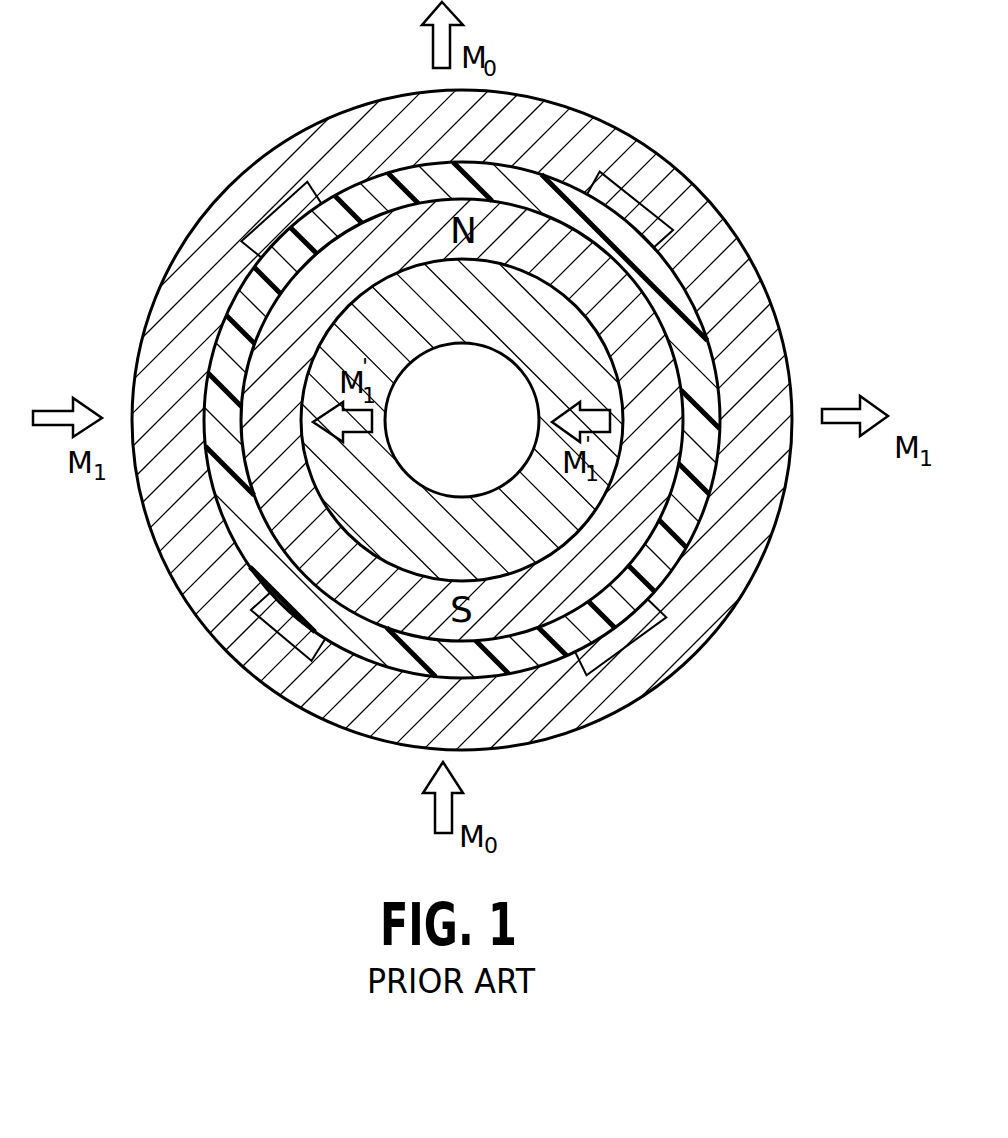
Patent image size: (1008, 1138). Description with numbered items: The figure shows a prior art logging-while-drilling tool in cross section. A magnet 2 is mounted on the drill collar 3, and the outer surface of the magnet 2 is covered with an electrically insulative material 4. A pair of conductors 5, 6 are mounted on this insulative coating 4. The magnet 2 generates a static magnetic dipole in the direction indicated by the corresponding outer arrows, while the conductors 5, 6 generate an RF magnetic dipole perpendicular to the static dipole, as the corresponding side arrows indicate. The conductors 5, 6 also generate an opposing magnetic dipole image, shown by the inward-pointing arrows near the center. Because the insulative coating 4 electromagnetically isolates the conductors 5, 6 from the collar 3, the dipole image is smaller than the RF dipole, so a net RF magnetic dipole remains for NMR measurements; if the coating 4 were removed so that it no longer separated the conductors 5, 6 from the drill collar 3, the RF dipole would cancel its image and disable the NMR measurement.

The magnet 2 is at (628, 555).
The drill collar 3 is at (573, 330).
The electrically insulative material 4 is at (705, 472).
The conductor 5 is at (280, 217).
The conductor 6 is at (290, 630).